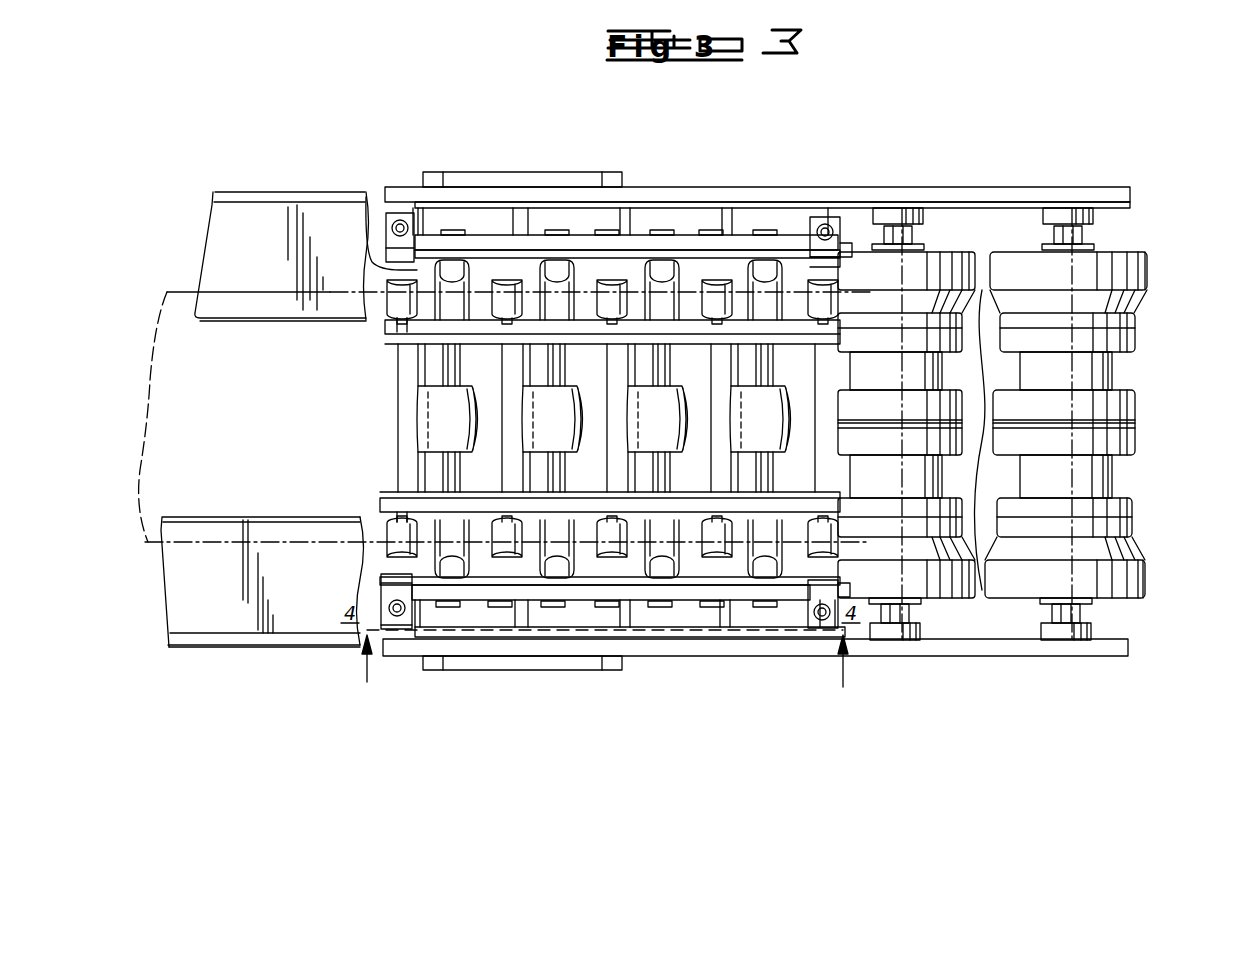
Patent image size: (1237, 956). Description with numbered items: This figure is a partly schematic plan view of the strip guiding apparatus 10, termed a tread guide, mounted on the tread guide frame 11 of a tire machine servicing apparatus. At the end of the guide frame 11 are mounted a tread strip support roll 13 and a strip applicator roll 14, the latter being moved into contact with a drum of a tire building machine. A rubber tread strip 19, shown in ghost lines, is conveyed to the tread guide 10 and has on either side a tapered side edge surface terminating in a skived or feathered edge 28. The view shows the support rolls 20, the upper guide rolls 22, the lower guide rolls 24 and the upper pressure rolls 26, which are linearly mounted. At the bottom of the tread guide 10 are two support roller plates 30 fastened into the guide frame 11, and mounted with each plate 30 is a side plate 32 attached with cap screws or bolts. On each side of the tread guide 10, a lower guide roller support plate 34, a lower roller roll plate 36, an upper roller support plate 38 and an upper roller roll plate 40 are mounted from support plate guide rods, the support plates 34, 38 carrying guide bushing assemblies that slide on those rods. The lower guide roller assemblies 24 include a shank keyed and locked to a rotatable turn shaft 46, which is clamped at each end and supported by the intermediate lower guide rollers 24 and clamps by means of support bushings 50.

The strip guiding apparatus 10 is at (615, 173).
The tread guide frame 11 is at (240, 647).
The tread strip support roll 13 is at (937, 260).
The strip applicator roll 14 is at (1142, 270).
The tread strip 19 is at (155, 385).
The support rolls 20 is at (400, 390).
The upper guide rolls 22 is at (498, 287).
The lower guide rolls 24 is at (575, 285).
The upper pressure rolls 26 is at (432, 432).
The feathered edge 28 is at (263, 293).
The support roller plates 30 is at (692, 190).
The side plate 32 is at (518, 180).
The lower guide roller support plate 34 is at (428, 240).
The lower roller roll plate 36 is at (425, 258).
The upper roller support plate 38 is at (430, 330).
The upper roller roll plate 40 is at (465, 338).
The turn shaft 46 is at (843, 253).
The support bushings 50 is at (620, 235).